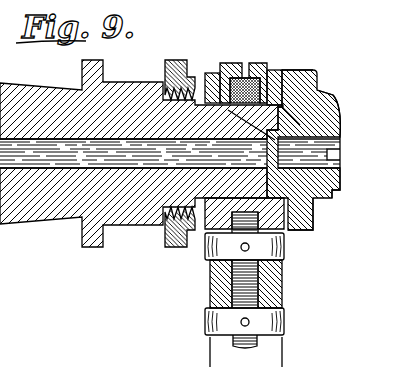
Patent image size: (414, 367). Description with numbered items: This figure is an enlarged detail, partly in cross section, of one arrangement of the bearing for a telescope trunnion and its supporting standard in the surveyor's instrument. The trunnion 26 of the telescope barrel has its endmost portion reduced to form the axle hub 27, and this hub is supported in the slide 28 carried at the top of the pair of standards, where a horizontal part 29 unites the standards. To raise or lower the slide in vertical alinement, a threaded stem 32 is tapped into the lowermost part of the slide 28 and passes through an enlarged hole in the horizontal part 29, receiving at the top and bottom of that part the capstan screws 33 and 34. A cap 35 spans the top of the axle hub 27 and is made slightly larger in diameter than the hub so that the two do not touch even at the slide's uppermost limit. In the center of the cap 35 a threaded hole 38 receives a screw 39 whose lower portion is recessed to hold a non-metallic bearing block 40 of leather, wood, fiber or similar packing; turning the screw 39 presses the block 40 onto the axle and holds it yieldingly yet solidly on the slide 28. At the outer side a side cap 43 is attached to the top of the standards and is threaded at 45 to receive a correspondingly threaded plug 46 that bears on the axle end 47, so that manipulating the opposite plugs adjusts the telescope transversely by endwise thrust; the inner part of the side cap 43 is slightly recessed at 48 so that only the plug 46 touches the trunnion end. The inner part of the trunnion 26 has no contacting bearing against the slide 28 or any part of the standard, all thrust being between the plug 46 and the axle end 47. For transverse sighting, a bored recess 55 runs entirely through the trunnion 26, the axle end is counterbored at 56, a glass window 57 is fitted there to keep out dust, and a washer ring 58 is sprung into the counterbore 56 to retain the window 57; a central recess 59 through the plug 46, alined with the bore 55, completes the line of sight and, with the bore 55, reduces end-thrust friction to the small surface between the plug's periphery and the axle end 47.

The trunnion 26 is at (41, 76).
The axle hub 27 is at (228, 190).
The slide 28 is at (203, 222).
The horizontal part 29 is at (283, 279).
The threaded stem 32 is at (262, 344).
The capstan screw 33 is at (284, 243).
The capstan screw 34 is at (283, 316).
The cap 35 is at (272, 70).
The threaded hole 38 is at (211, 73).
The screw 39 is at (222, 72).
The bearing block 40 is at (258, 72).
The side cap 43 is at (313, 72).
The thread 45 is at (334, 103).
The plug 46 is at (339, 117).
The axle end 47 is at (336, 198).
The recess 48 is at (294, 70).
The bored recess 55 is at (115, 150).
The counterbore 56 is at (233, 232).
The glass window 57 is at (205, 72).
The washer ring 58 is at (318, 112).
The central recess 59 is at (340, 160).